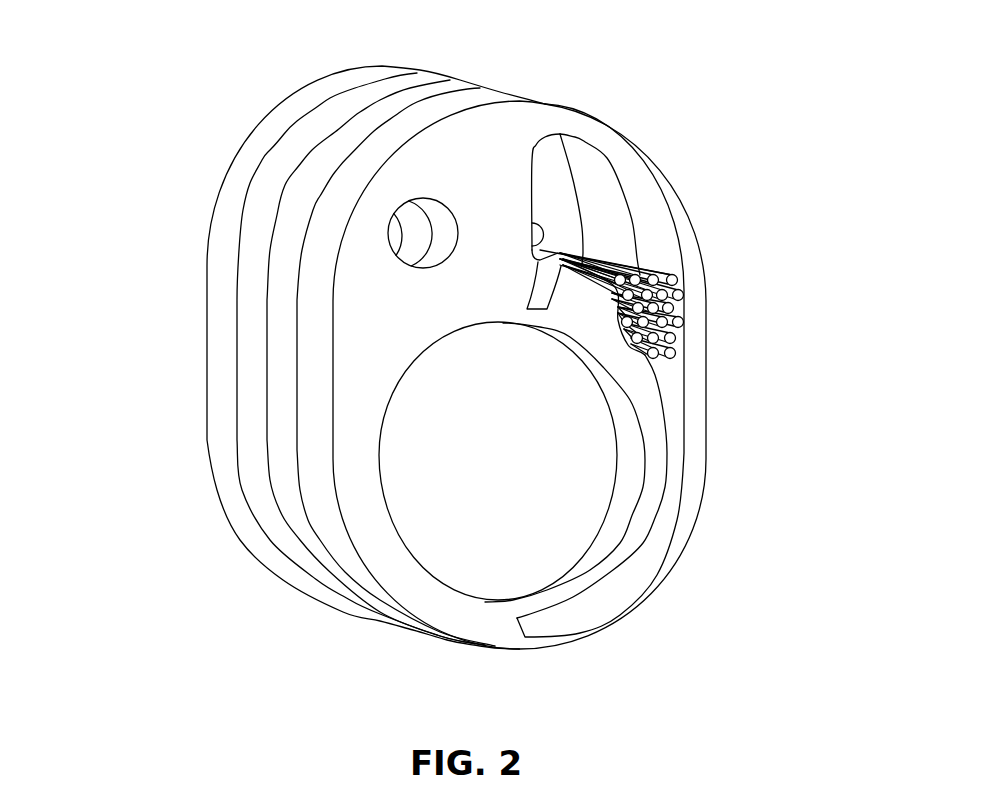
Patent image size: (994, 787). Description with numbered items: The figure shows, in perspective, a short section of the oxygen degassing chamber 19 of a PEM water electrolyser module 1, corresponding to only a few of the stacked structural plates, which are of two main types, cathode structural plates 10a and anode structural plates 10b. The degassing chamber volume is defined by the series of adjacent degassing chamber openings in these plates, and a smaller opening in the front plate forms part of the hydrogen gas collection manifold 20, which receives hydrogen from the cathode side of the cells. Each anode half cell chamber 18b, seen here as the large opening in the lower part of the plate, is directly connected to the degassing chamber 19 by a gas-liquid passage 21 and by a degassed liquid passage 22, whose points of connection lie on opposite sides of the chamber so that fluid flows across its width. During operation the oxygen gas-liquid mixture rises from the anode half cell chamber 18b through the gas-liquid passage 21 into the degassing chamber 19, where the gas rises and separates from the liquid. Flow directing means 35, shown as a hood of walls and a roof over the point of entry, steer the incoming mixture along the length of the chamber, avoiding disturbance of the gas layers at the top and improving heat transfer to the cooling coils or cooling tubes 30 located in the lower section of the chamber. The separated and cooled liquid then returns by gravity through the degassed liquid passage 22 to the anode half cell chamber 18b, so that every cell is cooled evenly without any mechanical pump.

The electrolyser module 1 is at (609, 66).
The cathode structural plate 10a is at (333, 533).
The anode structural plate 10b is at (327, 563).
The anode half cell chamber 18b is at (490, 467).
The oxygen degassing chamber 19 is at (634, 226).
The hydrogen gas collection manifold 20 is at (437, 232).
The gas-liquid passage 21 is at (543, 300).
The degassed liquid passage 22 is at (671, 449).
The cooling coils or cooling tubes 30 is at (677, 302).
The flow directing means 35 is at (560, 253).